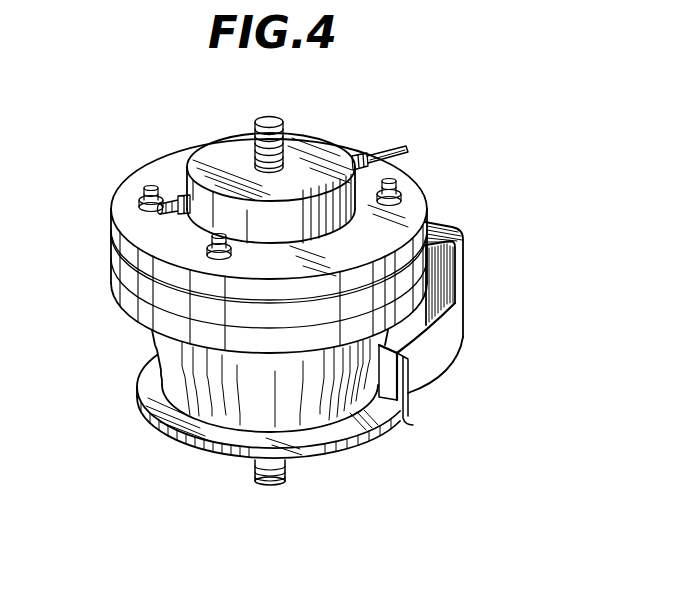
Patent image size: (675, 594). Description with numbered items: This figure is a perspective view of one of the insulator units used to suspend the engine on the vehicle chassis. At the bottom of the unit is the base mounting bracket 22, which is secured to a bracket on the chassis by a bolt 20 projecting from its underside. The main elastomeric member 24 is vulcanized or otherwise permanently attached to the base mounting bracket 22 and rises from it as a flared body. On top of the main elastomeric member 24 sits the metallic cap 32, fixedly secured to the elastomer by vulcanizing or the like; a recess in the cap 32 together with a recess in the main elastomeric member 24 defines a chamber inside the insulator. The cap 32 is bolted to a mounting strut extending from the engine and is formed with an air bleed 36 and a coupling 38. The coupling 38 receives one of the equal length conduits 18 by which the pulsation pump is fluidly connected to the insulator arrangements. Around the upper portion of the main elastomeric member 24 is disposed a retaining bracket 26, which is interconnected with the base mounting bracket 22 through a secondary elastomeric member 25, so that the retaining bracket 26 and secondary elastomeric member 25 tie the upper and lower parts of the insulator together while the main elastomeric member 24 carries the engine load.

The conduit 18 is at (400, 147).
The bolt 20 is at (253, 477).
The base mounting bracket 22 is at (372, 420).
The main elastomeric member 24 is at (173, 363).
The secondary elastomeric member 25 is at (440, 342).
The retaining bracket 26 is at (465, 267).
The metallic cap 32 is at (133, 223).
The air bleed 36 is at (177, 200).
The coupling 38 is at (353, 164).